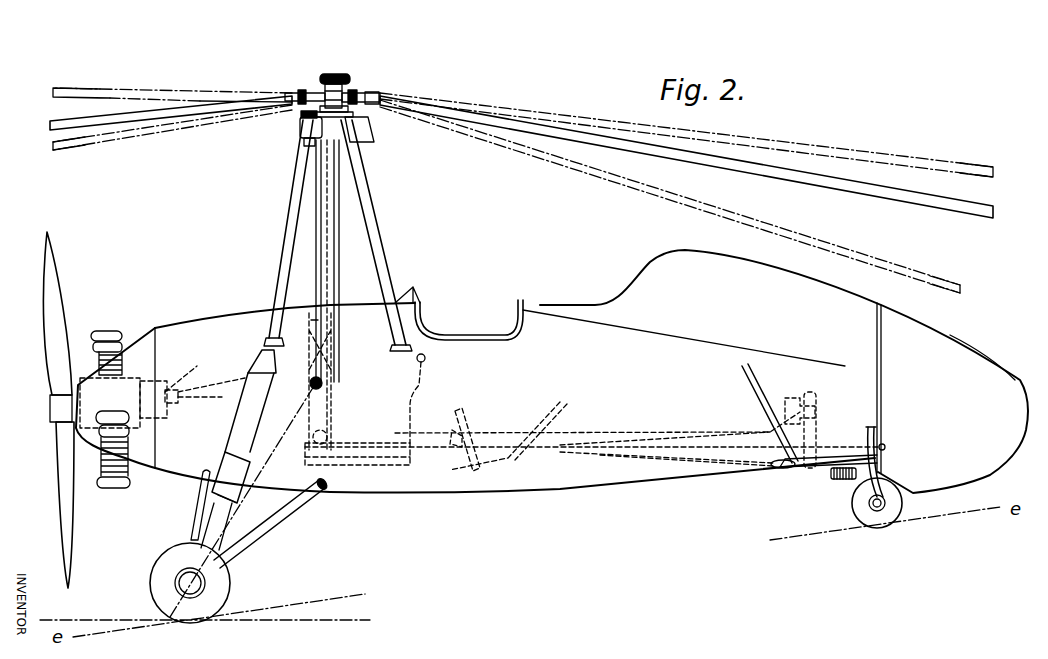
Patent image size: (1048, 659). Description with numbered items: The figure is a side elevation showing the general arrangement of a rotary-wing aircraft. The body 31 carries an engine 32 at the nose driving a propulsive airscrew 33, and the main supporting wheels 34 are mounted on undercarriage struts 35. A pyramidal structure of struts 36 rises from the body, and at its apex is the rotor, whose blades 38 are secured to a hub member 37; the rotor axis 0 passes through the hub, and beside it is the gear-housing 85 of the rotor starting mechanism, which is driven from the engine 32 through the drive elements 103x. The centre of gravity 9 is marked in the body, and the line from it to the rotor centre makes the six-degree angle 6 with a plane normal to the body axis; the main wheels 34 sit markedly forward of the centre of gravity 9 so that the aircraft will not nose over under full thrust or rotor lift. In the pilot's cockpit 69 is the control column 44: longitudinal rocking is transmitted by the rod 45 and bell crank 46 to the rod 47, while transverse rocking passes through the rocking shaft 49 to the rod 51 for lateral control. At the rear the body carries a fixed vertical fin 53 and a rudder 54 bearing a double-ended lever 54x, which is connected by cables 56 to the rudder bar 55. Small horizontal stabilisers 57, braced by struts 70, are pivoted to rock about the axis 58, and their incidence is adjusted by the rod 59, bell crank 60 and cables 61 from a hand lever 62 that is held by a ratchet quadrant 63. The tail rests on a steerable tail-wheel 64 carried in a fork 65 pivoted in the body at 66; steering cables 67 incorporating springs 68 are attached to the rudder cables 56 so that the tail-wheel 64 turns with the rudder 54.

The rotor axis 0 is at (335, 74).
The hub member 37 is at (350, 92).
The blades 38 is at (210, 108).
The gear-housing 85 is at (300, 127).
The struts 36 is at (357, 219).
The rod 51 is at (316, 255).
The rod 47 is at (340, 262).
The six-degree angle 6 is at (313, 318).
The centre of gravity 9 is at (322, 378).
The propulsive airscrew 33 is at (45, 264).
The engine 32 is at (112, 330).
The body 31 is at (170, 330).
The drive elements 103x is at (215, 397).
The pilot's cockpit 69 is at (487, 335).
The fixed vertical fin 53 is at (784, 371).
The rudder 54 is at (982, 373).
The double-ended lever 54x is at (886, 447).
The control column 44 is at (428, 360).
The rudder bar 55 is at (347, 443).
The rocking shaft 49 is at (380, 443).
The rod 45 is at (380, 465).
The bell crank 46 is at (310, 458).
The ratchet quadrant 63 is at (452, 436).
The hand lever 62 is at (466, 413).
The cables 61 is at (513, 424).
The cables 56 is at (647, 447).
The cables 67 is at (707, 463).
The struts 70 is at (746, 372).
The axis 58 is at (768, 470).
The horizontal stabilisers 57 is at (812, 470).
The springs 68 is at (850, 481).
The bell crank 60 is at (803, 402).
The rod 59 is at (832, 424).
The pivotal mounting 66 is at (878, 428).
The fork 65 is at (883, 482).
The tail-wheel 64 is at (884, 517).
The undercarriage struts 35 is at (240, 440).
The main supporting wheels 34 is at (226, 581).